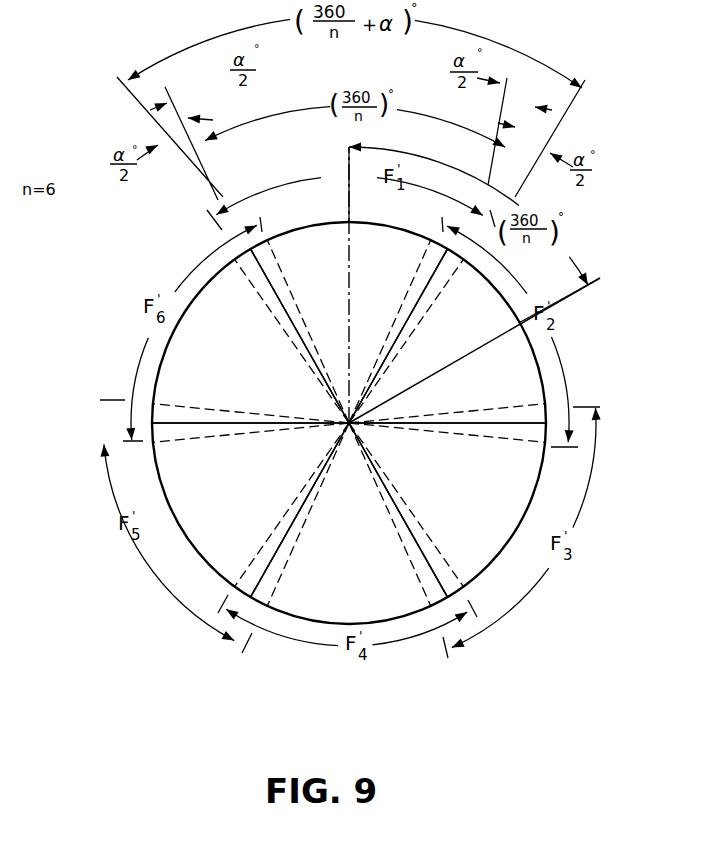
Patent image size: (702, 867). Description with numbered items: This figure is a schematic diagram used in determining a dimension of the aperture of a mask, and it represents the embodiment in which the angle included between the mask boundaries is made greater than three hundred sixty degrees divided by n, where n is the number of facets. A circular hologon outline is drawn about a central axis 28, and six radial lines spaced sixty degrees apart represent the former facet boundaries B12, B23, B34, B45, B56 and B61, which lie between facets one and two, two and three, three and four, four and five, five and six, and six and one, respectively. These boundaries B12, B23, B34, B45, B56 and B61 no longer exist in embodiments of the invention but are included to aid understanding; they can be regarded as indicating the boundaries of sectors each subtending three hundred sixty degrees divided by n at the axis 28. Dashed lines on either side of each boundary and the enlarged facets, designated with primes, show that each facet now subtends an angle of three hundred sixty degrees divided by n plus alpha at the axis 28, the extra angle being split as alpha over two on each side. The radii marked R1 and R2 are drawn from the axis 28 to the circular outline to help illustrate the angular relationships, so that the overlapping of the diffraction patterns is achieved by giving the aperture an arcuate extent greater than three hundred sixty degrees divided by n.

The axis 28 is at (349, 423).
The radial boundary B61 is at (271, 280).
The radial boundary B12 is at (422, 290).
The radial boundary B23 is at (512, 424).
The radial boundary B34 is at (434, 576).
The radial boundary B45 is at (260, 571).
The radial boundary B56 is at (184, 424).
The first radius R1 is at (347, 134).
The second radius R2 is at (601, 284).